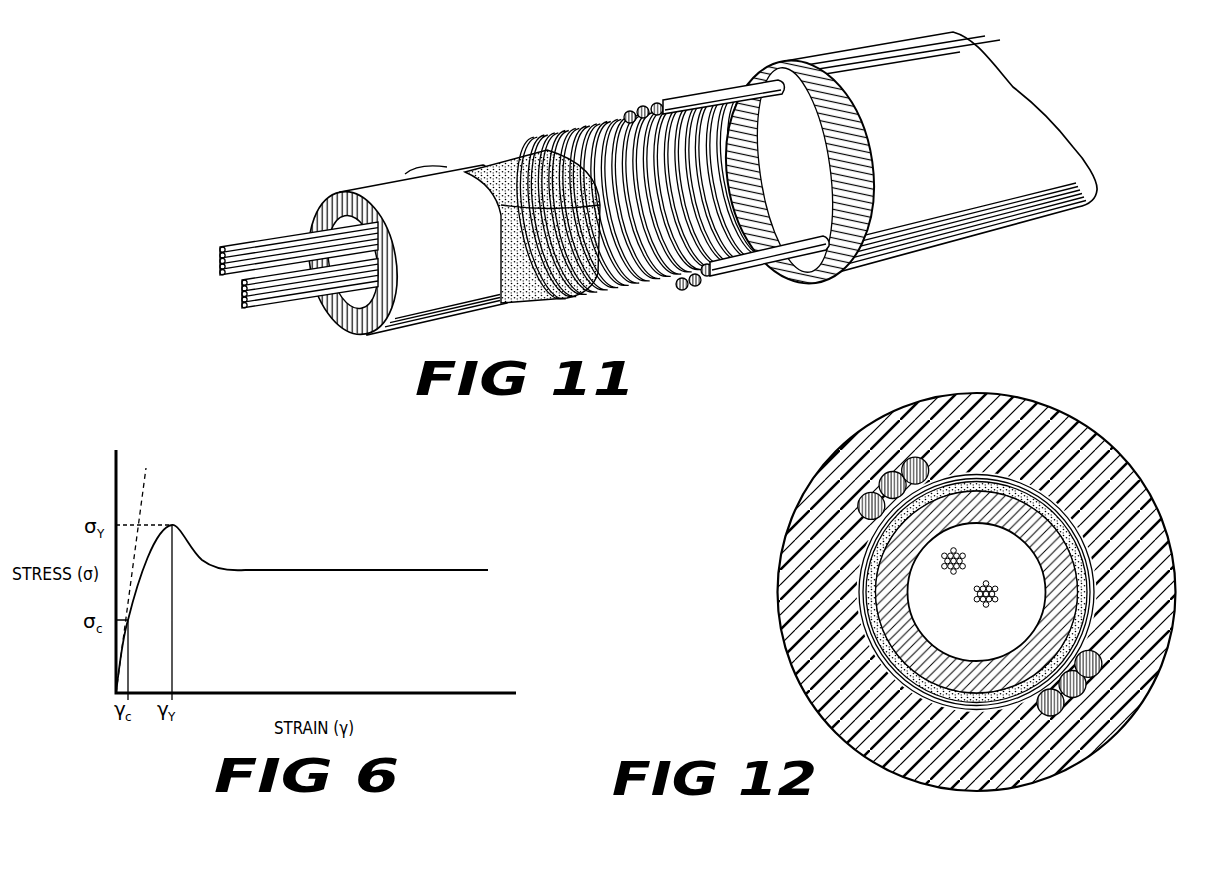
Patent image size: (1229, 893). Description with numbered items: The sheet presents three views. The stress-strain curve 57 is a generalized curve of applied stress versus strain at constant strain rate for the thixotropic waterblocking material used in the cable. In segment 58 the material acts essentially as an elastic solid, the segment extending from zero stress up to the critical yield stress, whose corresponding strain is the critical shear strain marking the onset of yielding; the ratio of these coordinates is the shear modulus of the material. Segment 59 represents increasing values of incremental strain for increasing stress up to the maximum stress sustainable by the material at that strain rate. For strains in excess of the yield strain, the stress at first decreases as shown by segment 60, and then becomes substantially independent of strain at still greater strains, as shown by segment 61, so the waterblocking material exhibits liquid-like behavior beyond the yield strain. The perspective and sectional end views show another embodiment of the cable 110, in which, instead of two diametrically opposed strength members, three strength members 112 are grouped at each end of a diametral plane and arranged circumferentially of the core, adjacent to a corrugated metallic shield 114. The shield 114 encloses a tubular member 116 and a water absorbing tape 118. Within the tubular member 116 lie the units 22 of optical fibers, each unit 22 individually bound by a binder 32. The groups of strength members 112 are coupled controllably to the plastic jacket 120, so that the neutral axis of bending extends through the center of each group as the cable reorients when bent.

In FIG. 11, the unit 22 is at (262, 313).
In FIG. 12, the unit 22 is at (948, 569).
In FIG. 11, the binder 32 is at (283, 237).
In FIG. 6, the stress-strain curve 57 is at (266, 531).
In FIG. 6, the segment 58 is at (110, 638).
In FIG. 6, the segment 59 is at (148, 528).
In FIG. 6, the segment 60 is at (194, 540).
In FIG. 6, the segment 61 is at (346, 567).
In FIG. 11, the cable 110 is at (644, 72).
In FIG. 12, the cable 110 is at (1044, 370).
In FIG. 11, the strength members 112 is at (690, 102).
In FIG. 12, the strength members 112 is at (919, 458).
In FIG. 11, the corrugated metallic shield 114 is at (590, 142).
In FIG. 12, the corrugated metallic shield 114 is at (869, 647).
In FIG. 11, the tubular member 116 is at (347, 320).
In FIG. 12, the tubular member 116 is at (1015, 525).
In FIG. 11, the water absorbing tape 118 is at (502, 164).
In FIG. 12, the water absorbing tape 118 is at (1051, 508).
In FIG. 11, the plastic jacket 120 is at (830, 260).
In FIG. 12, the plastic jacket 120 is at (1045, 414).